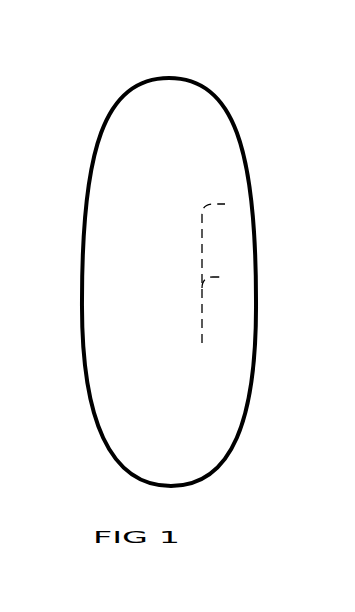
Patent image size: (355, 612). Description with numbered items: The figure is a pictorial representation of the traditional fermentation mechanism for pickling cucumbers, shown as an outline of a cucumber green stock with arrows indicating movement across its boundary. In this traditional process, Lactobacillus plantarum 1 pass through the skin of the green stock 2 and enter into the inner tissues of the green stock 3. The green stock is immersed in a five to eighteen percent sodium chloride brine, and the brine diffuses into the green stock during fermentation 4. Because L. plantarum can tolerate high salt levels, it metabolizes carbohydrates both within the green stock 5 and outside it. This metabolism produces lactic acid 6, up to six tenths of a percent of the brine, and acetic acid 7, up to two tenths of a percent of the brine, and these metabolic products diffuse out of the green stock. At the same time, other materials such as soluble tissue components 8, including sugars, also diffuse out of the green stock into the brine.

The Lactobacillus plantarum 1 is at (116, 353).
The skin of the green stock 2 is at (215, 100).
The inner tissues of the green stock 3 is at (157, 112).
The sodium chloride brine diffusion 4 is at (114, 203).
The carbohydrate metabolism within the green stock 5 is at (202, 343).
The lactic acid 6 is at (225, 204).
The acetic acid 7 is at (223, 277).
The soluble tissue components 8 is at (225, 352).